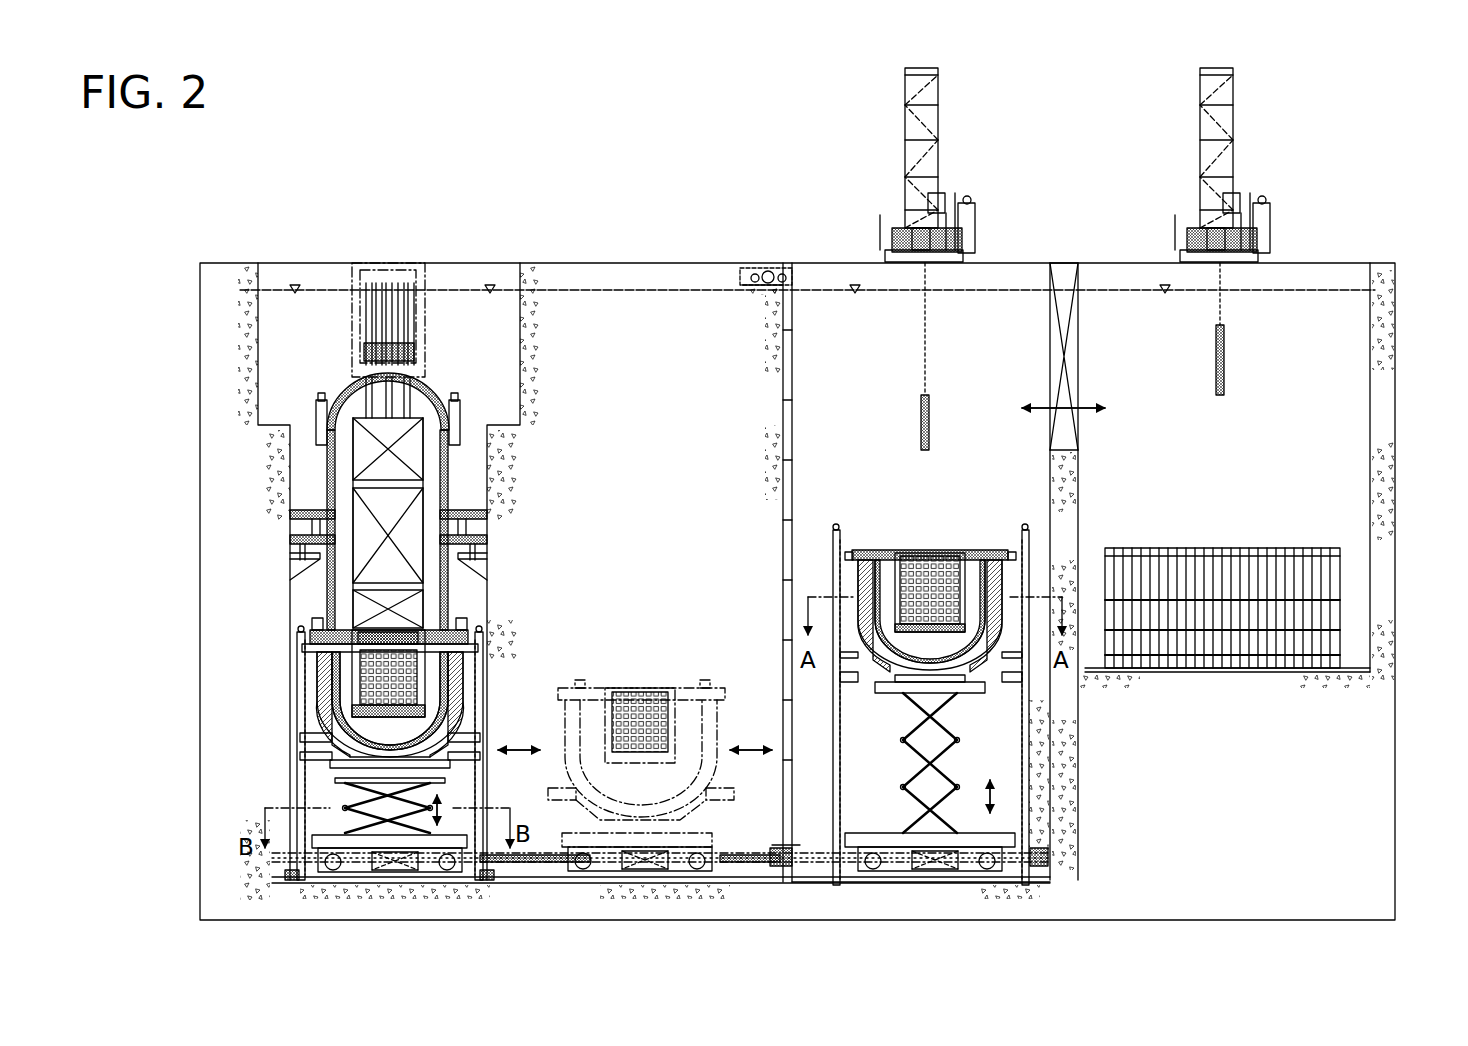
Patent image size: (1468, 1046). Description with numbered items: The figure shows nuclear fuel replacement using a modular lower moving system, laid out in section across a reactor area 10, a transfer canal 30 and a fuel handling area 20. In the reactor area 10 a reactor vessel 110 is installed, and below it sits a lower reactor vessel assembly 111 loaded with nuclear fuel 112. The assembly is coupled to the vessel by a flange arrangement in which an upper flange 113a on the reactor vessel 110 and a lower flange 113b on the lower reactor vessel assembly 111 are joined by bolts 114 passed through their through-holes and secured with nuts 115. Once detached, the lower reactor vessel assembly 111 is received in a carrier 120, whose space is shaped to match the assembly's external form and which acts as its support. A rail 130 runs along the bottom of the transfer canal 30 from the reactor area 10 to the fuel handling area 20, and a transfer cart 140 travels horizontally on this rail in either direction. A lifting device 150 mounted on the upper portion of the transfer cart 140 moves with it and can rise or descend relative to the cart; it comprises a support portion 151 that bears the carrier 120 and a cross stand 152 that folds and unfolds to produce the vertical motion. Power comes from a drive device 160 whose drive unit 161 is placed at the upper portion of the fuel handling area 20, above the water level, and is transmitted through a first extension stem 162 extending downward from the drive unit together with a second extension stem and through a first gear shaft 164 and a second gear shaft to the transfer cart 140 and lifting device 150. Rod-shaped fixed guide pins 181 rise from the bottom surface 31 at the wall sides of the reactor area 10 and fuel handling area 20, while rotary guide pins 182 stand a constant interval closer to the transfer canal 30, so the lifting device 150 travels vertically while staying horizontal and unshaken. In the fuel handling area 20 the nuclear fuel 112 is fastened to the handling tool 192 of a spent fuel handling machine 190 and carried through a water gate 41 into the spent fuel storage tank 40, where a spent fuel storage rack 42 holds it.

The reactor area 10 is at (448, 306).
The fuel handling area 20 is at (838, 305).
The transfer canal 30 is at (749, 708).
The bottom surface 31 is at (505, 882).
The spent fuel storage tank 40 is at (1318, 318).
The water gate 41 is at (1067, 275).
The spent fuel storage rack 42 is at (1335, 670).
The reactor vessel 110 is at (455, 480).
The lower reactor vessel assembly 111 is at (410, 662).
The nuclear fuel 112 is at (322, 700).
The upper flange 113a is at (318, 630).
The lower flange 113b is at (318, 647).
The bolt 114 is at (440, 628).
The nut 115 is at (470, 638).
The carrier 120 is at (425, 848).
The rail 130 is at (628, 875).
The transfer cart 140 is at (330, 868).
The lifting device 150 is at (637, 761).
The support portion 151 is at (330, 785).
The cross stand 152 is at (345, 812).
The drive device 160 is at (765, 262).
The drive unit 161 is at (757, 298).
The first extension stem 162 is at (795, 450).
The first gear shaft 164 is at (775, 870).
The fixed guide pin 181 is at (303, 668).
The rotary guide pin 182 is at (480, 705).
The spent fuel handling machine 190 is at (940, 178).
The handling tool 192 is at (928, 343).